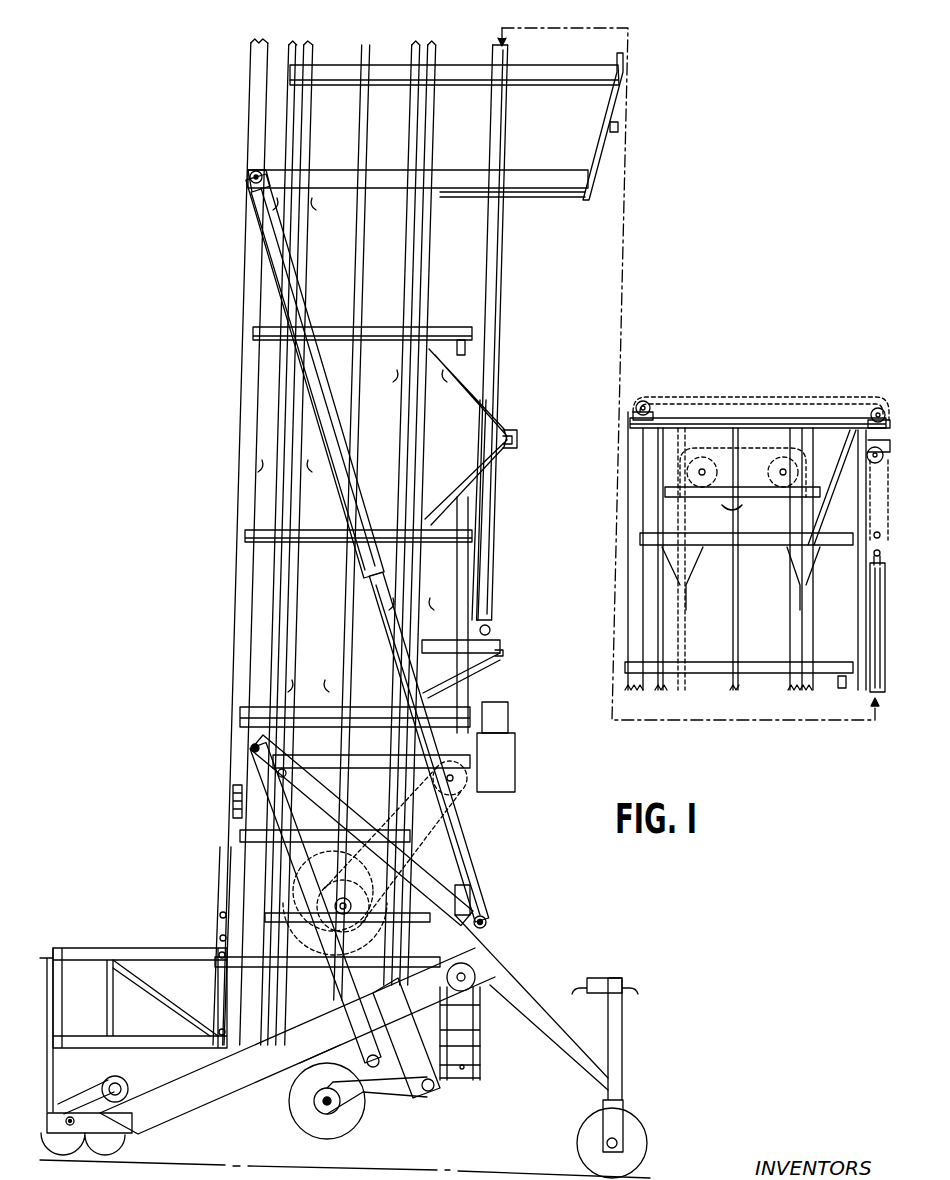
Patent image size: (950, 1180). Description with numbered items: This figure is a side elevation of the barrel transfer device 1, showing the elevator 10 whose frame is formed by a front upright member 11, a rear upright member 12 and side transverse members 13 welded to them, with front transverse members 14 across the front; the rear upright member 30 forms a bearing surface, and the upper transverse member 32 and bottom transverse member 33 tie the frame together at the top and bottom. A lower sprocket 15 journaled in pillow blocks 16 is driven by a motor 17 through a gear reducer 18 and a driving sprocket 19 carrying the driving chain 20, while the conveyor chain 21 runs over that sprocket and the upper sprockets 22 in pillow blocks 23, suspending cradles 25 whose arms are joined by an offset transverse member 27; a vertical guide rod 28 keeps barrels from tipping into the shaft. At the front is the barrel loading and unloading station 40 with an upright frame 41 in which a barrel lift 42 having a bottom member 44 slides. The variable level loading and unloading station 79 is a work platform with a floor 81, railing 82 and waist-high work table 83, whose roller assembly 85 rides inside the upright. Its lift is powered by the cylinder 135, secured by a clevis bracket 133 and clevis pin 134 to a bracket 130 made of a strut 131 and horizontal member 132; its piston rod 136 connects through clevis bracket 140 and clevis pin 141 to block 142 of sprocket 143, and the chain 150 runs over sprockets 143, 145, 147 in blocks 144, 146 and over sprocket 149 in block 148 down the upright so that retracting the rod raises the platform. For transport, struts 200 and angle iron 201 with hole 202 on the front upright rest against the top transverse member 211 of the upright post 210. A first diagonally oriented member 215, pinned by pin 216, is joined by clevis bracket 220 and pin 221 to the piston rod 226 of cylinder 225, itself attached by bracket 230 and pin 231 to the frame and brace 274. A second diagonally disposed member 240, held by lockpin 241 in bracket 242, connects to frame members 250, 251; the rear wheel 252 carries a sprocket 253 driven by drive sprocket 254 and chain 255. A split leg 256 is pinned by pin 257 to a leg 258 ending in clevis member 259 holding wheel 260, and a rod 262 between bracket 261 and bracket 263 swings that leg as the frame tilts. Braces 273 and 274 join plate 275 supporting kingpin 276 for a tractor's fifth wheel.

The barrel transfer device 1 is at (142, 152).
The elevator 10 is at (205, 426).
The front upright member 11 is at (430, 46).
The rear upright member 12 is at (301, 47).
The side transverse member 13 is at (262, 528).
The front transverse member 14 is at (465, 355).
The lower sprocket 15 is at (297, 895).
The pillow block 16 is at (335, 895).
The motor 17 is at (500, 718).
The gear reducer 18 is at (510, 778).
The driving sprocket 19 is at (465, 790).
The driving chain 20 is at (425, 848).
The conveyor chain 21 is at (748, 455).
The upper sprocket 22 is at (788, 455).
The pillow block 23 is at (695, 482).
The cradle 25 is at (262, 468).
The offset transverse member 27 is at (832, 487).
The vertical guide rod 28 is at (368, 45).
The rear upright member 30 is at (250, 48).
The upper transverse member 32 is at (645, 440).
The bottom transverse member 33 is at (220, 958).
The barrel loading and unloading station 40 is at (558, 908).
The upright frame 41 is at (478, 1023).
The barrel lift 42 is at (472, 1048).
The bottom member 44 is at (462, 1070).
The variable level loading and unloading station 79 is at (116, 878).
The floor 81 is at (69, 1035).
The railing 82 is at (97, 942).
The work table 83 is at (150, 942).
The roller assembly 85 is at (220, 915).
The bracket 130 is at (505, 650).
The strut 131 is at (472, 665).
The horizontal member 132 is at (500, 656).
The clevis bracket 133 is at (500, 644).
The clevis pin 134 is at (488, 628).
The cylinder 135 is at (495, 489).
The piston rod 136 is at (494, 52).
The clevis bracket 140 is at (882, 568).
The clevis pin 141 is at (880, 553).
The block 142 is at (880, 535).
The sprocket 143 is at (888, 512).
The block 144 is at (883, 438).
The sprocket 145 is at (885, 455).
The block 146 is at (887, 416).
The sprocket 147 is at (872, 408).
The block 148 is at (652, 405).
The sprocket 149 is at (638, 402).
The chain 150 is at (233, 801).
The strut 200 is at (478, 407).
The angle iron 201 is at (518, 440).
The hole 202 is at (510, 432).
The upright post 210 is at (620, 1030).
The top transverse member 211 is at (615, 980).
The first diagonally oriented member 215 is at (545, 1003).
The pin 216 is at (278, 773).
The clevis bracket 220 is at (491, 922).
The pin 221 is at (486, 916).
The cylinder 225 is at (276, 285).
The piston rod 226 is at (470, 878).
The bracket 230 is at (252, 190).
The pin 231 is at (250, 177).
The second diagonally disposed member 240 is at (256, 1093).
The lockpin 241 is at (472, 978).
The bracket 242 is at (472, 965).
The frame member 250 is at (130, 1125).
The frame member 251 is at (47, 1065).
The rear wheel 252 is at (100, 1138).
The sprocket 253 is at (120, 1100).
The drive sprocket 254 is at (135, 1090).
The chain 255 is at (100, 1078).
The split leg 256 is at (368, 1056).
The pin 257 is at (428, 1098).
The leg 258 is at (378, 1098).
The clevis member 259 is at (332, 1103).
The wheel 260 is at (300, 1152).
The bracket 261 is at (326, 1050).
The rod 262 is at (275, 815).
The bracket 263 is at (252, 745).
The brace 273 is at (600, 78).
The brace 274 is at (300, 178).
The plate 275 is at (595, 182).
The kingpin 276 is at (620, 128).